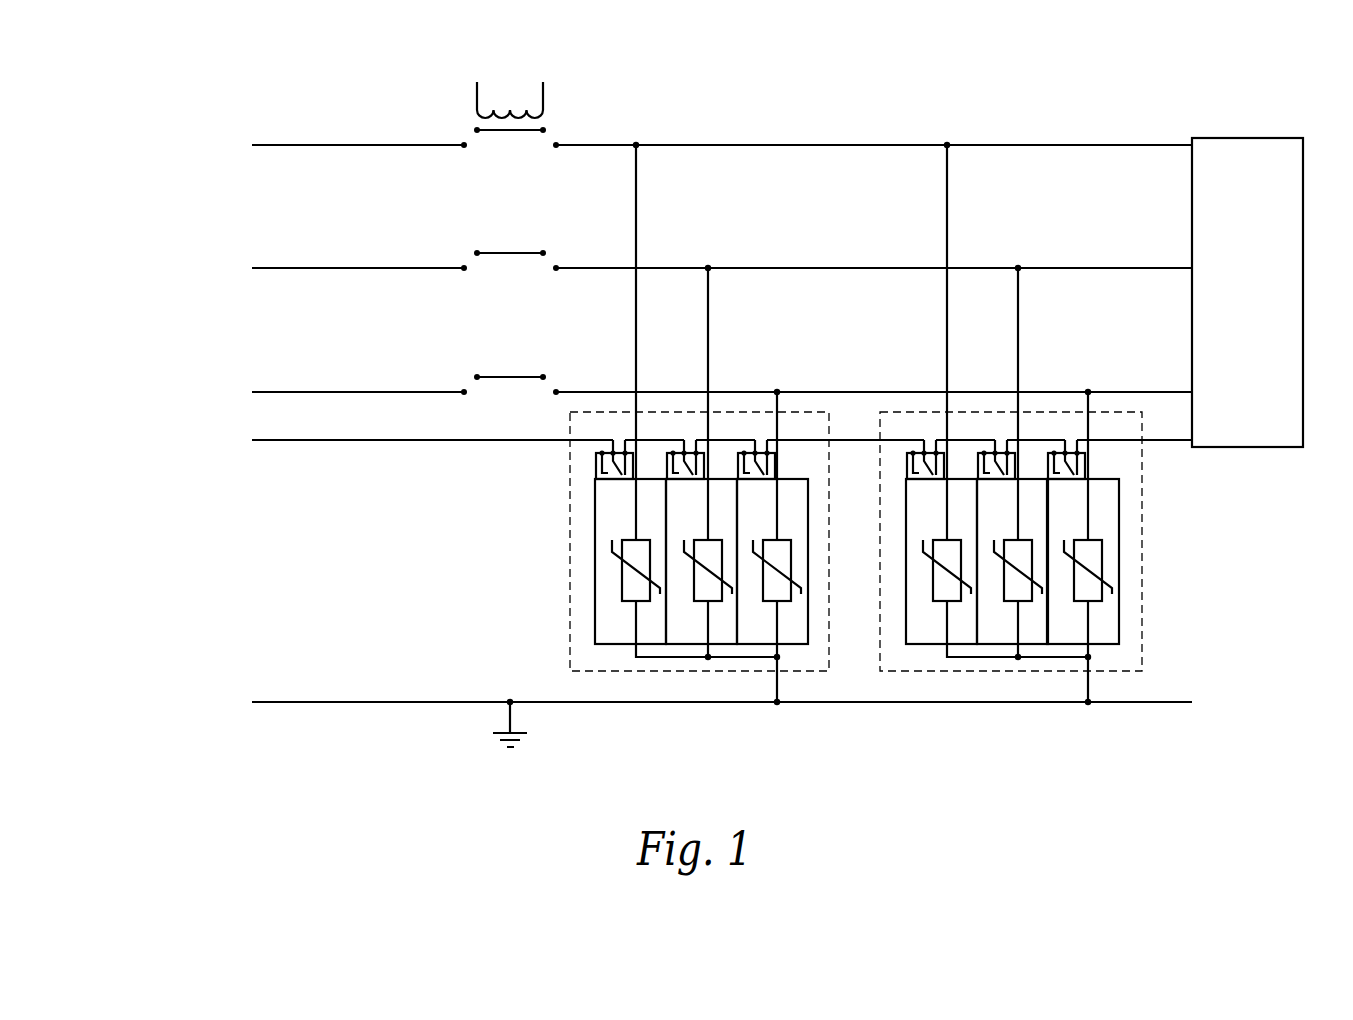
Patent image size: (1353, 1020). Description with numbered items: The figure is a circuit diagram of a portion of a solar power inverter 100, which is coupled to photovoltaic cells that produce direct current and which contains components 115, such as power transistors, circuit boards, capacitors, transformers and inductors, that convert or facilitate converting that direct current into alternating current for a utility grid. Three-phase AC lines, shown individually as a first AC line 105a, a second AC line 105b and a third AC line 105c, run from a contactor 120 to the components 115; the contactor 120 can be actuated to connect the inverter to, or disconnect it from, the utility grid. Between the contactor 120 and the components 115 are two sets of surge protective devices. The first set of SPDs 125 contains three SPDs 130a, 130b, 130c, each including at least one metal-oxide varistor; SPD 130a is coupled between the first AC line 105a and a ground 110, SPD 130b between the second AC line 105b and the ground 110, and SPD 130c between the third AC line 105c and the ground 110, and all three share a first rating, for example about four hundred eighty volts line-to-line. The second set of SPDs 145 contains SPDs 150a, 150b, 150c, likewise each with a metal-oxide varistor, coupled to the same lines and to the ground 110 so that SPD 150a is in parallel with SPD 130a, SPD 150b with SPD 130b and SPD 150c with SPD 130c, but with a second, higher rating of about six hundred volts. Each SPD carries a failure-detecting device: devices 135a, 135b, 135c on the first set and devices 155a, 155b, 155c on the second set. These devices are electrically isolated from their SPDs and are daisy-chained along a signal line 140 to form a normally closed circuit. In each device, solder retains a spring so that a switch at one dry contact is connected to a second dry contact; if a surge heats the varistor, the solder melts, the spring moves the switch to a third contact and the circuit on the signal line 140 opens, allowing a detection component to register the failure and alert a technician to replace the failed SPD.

The solar power inverter 100 is at (851, 748).
The first AC line 105a is at (215, 146).
The second AC line 105b is at (215, 270).
The third AC line 105c is at (215, 394).
The ground 110 is at (205, 703).
The components 115 is at (1240, 138).
The contactor 120 is at (544, 98).
The first set of surge protective devices 125 is at (568, 598).
The surge protective device 130a is at (613, 644).
The surge protective device 130b is at (693, 644).
The surge protective device 130c is at (800, 644).
The device 135a is at (594, 466).
The device 135b is at (705, 462).
The device 135c is at (776, 462).
The signal line 140 is at (182, 441).
The second set of surge protective devices 145 is at (1143, 598).
The surge protective device 150a is at (924, 644).
The surge protective device 150b is at (1004, 644).
The surge protective device 150c is at (1111, 644).
The device 155a is at (905, 466).
The device 155b is at (1016, 462).
The device 155c is at (1086, 462).